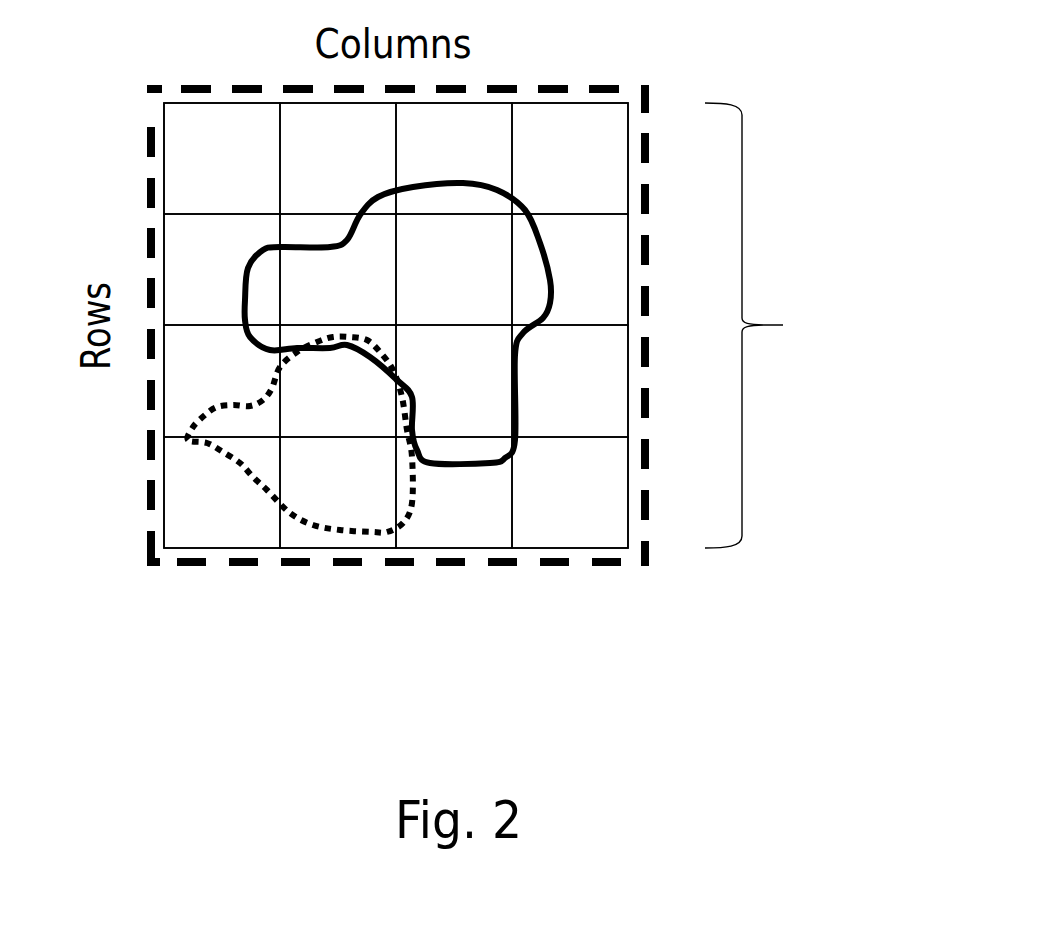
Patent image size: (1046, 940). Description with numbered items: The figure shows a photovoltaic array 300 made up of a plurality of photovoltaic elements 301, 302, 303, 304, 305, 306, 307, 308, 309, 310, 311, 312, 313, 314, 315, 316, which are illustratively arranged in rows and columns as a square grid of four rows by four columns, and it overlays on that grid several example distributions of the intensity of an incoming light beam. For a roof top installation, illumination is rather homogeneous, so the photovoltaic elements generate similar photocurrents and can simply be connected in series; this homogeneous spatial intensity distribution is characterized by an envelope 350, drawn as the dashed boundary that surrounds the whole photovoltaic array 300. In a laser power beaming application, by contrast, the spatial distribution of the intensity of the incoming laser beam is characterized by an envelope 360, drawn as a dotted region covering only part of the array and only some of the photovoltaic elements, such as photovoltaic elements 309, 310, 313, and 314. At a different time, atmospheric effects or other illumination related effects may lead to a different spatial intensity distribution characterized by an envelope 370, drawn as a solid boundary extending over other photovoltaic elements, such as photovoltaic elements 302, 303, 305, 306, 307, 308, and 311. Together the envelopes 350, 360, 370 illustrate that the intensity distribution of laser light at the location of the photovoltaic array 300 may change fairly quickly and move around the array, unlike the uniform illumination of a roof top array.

The photovoltaic array 300 is at (502, 325).
The photovoltaic element 301 is at (222, 158).
The photovoltaic element 302 is at (338, 158).
The photovoltaic element 303 is at (454, 158).
The photovoltaic element 304 is at (570, 158).
The photovoltaic element 305 is at (222, 269).
The photovoltaic element 306 is at (338, 269).
The photovoltaic element 307 is at (454, 269).
The photovoltaic element 308 is at (570, 269).
The photovoltaic element 309 is at (222, 381).
The photovoltaic element 310 is at (338, 381).
The photovoltaic element 311 is at (454, 381).
The photovoltaic element 312 is at (570, 381).
The photovoltaic element 313 is at (222, 492).
The photovoltaic element 314 is at (338, 492).
The photovoltaic element 315 is at (454, 492).
The photovoltaic element 316 is at (570, 492).
The envelope 350 is at (242, 576).
The envelope 360 is at (431, 525).
The envelope 370 is at (511, 471).